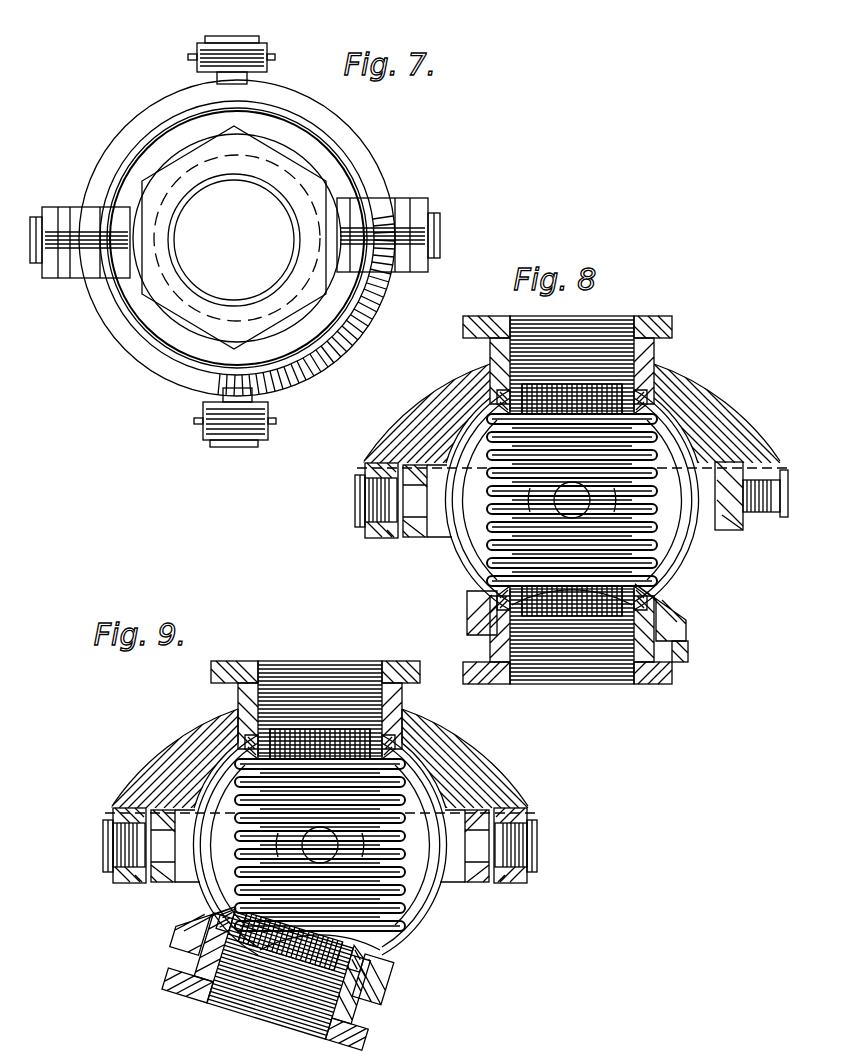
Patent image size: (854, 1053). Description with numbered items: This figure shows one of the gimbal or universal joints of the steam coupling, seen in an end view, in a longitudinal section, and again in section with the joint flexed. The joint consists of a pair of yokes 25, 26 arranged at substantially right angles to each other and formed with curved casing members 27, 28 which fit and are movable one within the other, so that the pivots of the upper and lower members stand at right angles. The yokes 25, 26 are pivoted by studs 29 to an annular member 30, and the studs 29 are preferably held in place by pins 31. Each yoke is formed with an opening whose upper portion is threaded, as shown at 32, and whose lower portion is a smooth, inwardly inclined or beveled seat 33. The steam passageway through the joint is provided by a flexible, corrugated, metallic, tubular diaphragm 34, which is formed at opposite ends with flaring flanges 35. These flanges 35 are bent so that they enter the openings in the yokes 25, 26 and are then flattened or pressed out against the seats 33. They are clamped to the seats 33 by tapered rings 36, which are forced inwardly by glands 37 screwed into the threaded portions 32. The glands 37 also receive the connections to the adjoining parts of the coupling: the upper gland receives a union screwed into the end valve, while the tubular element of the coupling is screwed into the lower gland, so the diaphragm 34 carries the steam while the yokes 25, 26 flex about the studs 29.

In FIG. 7, the yoke 25 is at (360, 215).
In FIG. 8, the yoke 25 is at (563, 409).
In FIG. 9, the yoke 25 is at (323, 754).
In FIG. 7, the yoke 26 is at (266, 50).
In FIG. 8, the yoke 26 is at (687, 612).
In FIG. 9, the yoke 26 is at (194, 926).
In FIG. 7, the curved casing member 27 is at (325, 155).
In FIG. 8, the curved casing member 27 is at (572, 500).
In FIG. 9, the curved casing member 27 is at (320, 845).
In FIG. 8, the curved casing member 28 is at (630, 577).
In FIG. 9, the curved casing member 28 is at (363, 931).
In FIG. 7, the stud 29 is at (250, 80).
In FIG. 8, the stud 29 is at (582, 472).
In FIG. 9, the stud 29 is at (347, 856).
In FIG. 7, the annular member 30 is at (370, 150).
In FIG. 8, the annular member 30 is at (422, 521).
In FIG. 9, the annular member 30 is at (361, 837).
In FIG. 7, the pin 31 is at (190, 57).
In FIG. 8, the pin 31 is at (561, 495).
In FIG. 9, the pin 31 is at (301, 856).
In FIG. 8, the threaded portion 32 is at (571, 492).
In FIG. 9, the threaded portion 32 is at (399, 847).
In FIG. 8, the beveled seat 33 is at (597, 453).
In FIG. 9, the beveled seat 33 is at (378, 858).
In FIG. 8, the corrugated tubular diaphragm 34 is at (517, 562).
In FIG. 9, the corrugated tubular diaphragm 34 is at (356, 845).
In FIG. 8, the flaring flange 35 is at (720, 515).
In FIG. 9, the flaring flange 35 is at (294, 711).
In FIG. 8, the tapered ring 36 is at (613, 524).
In FIG. 9, the tapered ring 36 is at (298, 839).
In FIG. 7, the gland 37 is at (190, 300).
In FIG. 8, the gland 37 is at (567, 503).
In FIG. 9, the gland 37 is at (291, 846).